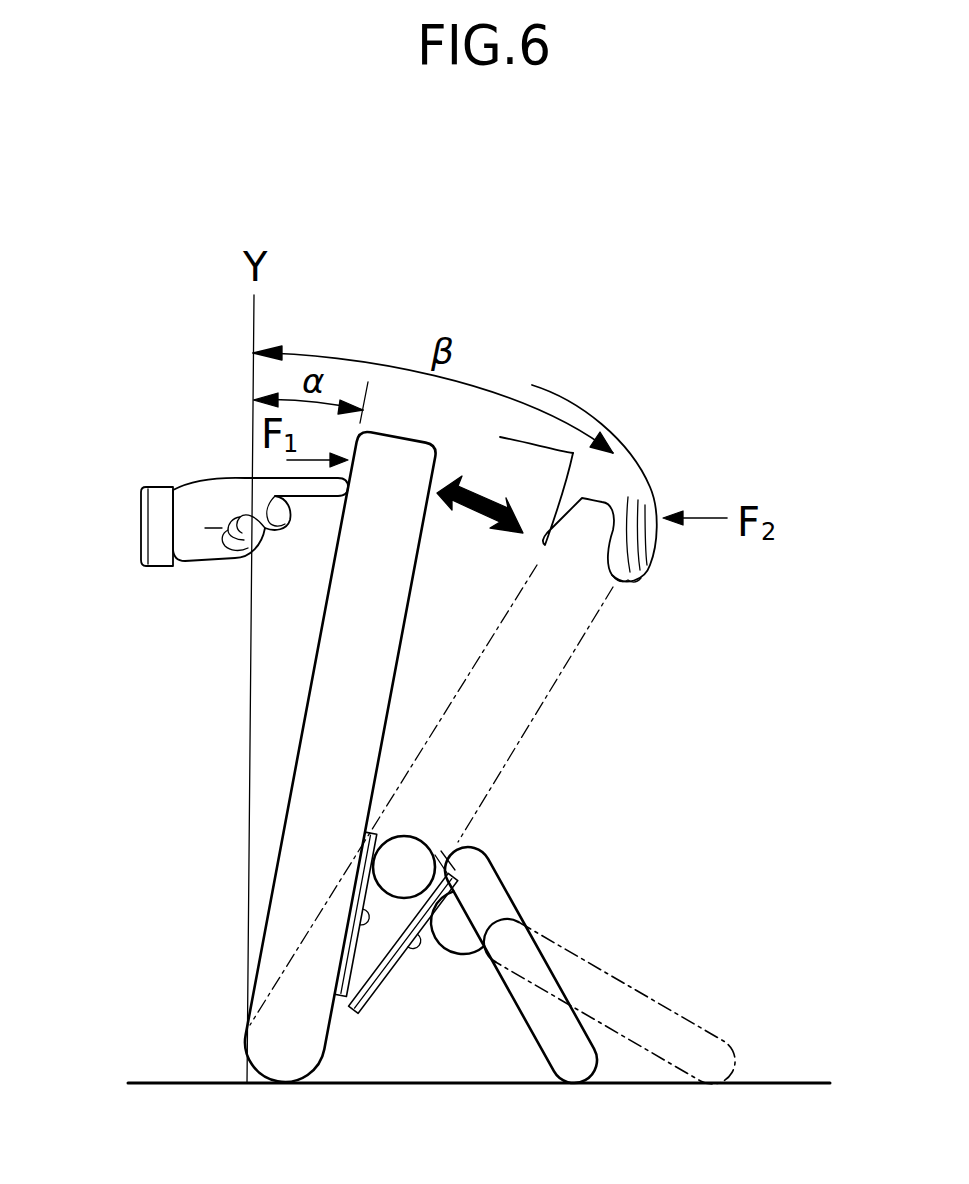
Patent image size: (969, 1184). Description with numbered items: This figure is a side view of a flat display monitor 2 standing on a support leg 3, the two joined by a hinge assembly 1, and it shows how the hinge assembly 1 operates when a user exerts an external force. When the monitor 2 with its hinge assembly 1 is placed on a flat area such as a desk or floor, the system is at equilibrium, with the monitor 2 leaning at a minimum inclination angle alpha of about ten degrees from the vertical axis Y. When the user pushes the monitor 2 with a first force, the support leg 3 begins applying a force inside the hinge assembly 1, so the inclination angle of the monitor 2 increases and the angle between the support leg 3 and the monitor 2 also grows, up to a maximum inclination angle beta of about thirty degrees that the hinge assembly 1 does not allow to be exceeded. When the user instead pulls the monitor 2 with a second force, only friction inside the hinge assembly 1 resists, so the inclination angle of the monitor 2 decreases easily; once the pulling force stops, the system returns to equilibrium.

The hinge assembly 1 is at (420, 832).
The flat display monitor 2 is at (297, 750).
The support leg 3 is at (540, 973).